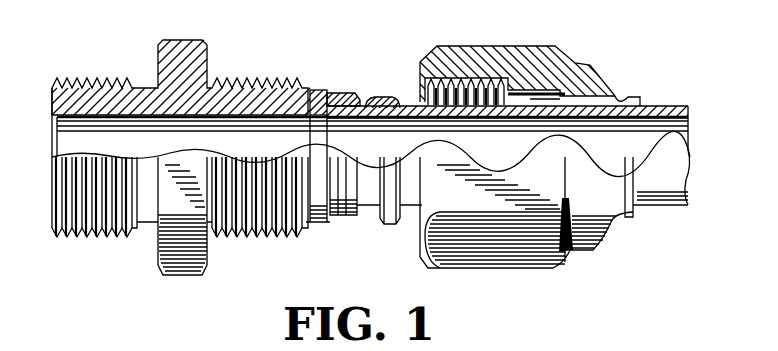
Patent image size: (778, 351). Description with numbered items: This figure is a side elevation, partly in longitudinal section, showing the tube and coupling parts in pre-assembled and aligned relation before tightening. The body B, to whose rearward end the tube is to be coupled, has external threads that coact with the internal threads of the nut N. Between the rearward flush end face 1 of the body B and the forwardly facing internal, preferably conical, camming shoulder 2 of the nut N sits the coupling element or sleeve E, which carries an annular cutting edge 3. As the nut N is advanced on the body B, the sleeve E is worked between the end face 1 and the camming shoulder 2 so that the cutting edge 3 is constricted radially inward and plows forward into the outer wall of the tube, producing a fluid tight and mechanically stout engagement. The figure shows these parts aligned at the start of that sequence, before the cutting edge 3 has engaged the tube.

The body B is at (219, 86).
The rearward flush end face 1 is at (304, 102).
The coupling element or sleeve E is at (350, 100).
The annular cutting edge 3 is at (366, 100).
The nut N is at (484, 47).
The camming shoulder 2 is at (563, 100).